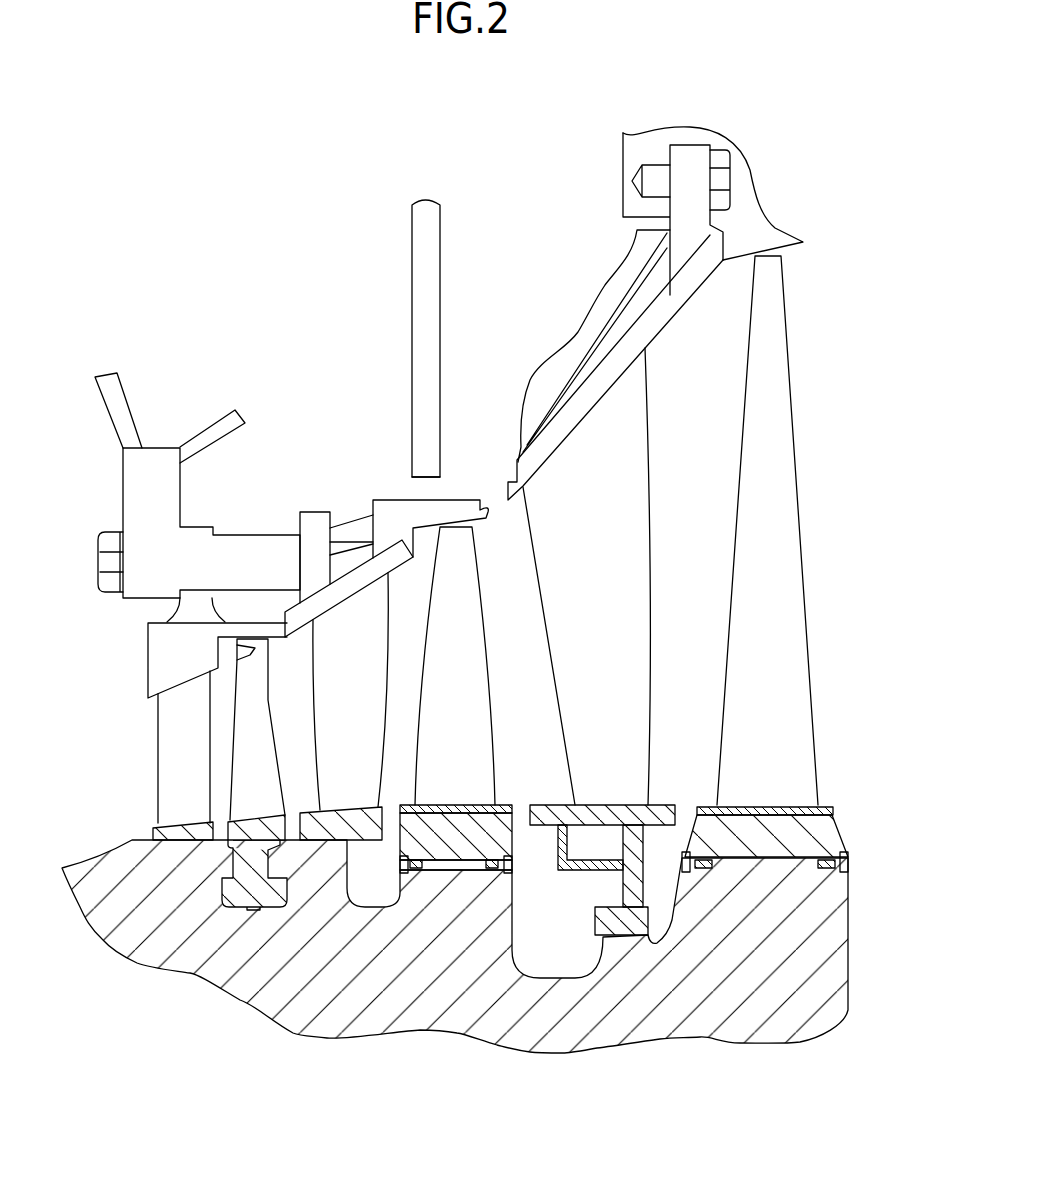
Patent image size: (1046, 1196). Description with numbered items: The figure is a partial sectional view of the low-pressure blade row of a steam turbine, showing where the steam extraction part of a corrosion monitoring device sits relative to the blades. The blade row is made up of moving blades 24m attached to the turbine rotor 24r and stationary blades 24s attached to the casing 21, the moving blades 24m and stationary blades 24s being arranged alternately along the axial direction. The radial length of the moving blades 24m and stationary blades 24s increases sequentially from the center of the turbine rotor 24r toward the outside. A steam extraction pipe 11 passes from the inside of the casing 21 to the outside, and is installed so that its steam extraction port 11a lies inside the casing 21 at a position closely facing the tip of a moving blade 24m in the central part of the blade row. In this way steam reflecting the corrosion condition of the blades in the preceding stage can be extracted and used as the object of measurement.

The steam extraction pipe 11 is at (412, 286).
The steam extraction port 11a is at (415, 480).
The casing 21 is at (158, 642).
The moving blades 24m is at (242, 753).
The stationary blades 24s is at (368, 645).
The turbine rotor 24r is at (822, 942).